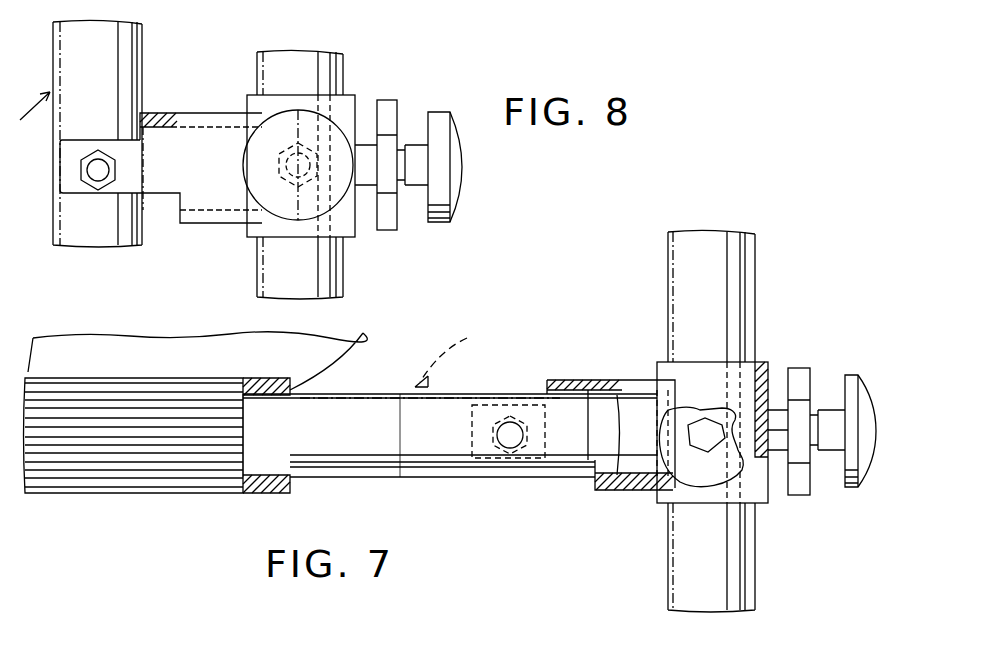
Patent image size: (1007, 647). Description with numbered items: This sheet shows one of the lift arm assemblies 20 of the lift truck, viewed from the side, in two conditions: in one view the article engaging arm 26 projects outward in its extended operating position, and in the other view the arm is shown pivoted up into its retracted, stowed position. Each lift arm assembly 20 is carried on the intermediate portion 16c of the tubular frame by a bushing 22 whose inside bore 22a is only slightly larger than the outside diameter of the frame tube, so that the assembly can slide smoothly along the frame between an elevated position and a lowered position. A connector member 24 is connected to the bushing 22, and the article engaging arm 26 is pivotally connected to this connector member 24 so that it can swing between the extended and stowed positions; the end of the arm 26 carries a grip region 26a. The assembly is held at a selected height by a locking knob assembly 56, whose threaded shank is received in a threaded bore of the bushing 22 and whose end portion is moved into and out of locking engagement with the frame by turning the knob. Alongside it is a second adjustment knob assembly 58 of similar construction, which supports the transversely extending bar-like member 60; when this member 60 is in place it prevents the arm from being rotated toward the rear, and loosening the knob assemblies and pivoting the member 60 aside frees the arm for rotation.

In FIG. 8, the intermediate portion 16c is at (340, 62).
In FIG. 7, the intermediate portion 16c is at (742, 270).
In FIG. 7, the lift arm assembly 20 is at (131, 516).
In FIG. 8, the bushing 22 is at (268, 100).
In FIG. 7, the bushing 22 is at (760, 362).
In FIG. 7, the inside bore 22a is at (752, 395).
In FIG. 8, the connector member 24 is at (210, 195).
In FIG. 7, the connector member 24 is at (630, 400).
In FIG. 8, the article engaging arm 26 is at (115, 49).
In FIG. 7, the hand grip 26a is at (202, 472).
In FIG. 8, the locking knob assembly 56 is at (250, 160).
In FIG. 7, the locking knob assembly 56 is at (712, 475).
In FIG. 8, the second adjustment knob assembly 58 is at (458, 187).
In FIG. 7, the second adjustment knob assembly 58 is at (855, 373).
In FIG. 8, the bar-like member 60 is at (388, 222).
In FIG. 7, the bar-like member 60 is at (800, 485).